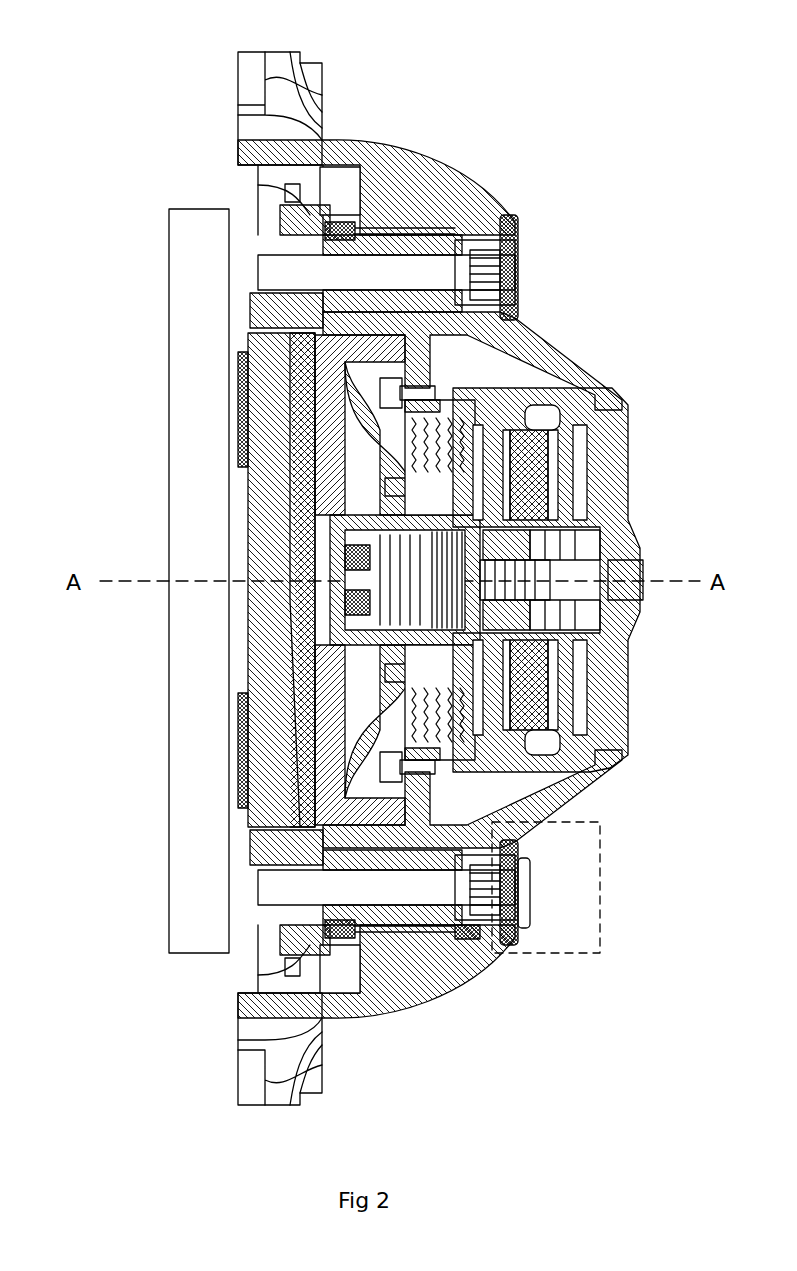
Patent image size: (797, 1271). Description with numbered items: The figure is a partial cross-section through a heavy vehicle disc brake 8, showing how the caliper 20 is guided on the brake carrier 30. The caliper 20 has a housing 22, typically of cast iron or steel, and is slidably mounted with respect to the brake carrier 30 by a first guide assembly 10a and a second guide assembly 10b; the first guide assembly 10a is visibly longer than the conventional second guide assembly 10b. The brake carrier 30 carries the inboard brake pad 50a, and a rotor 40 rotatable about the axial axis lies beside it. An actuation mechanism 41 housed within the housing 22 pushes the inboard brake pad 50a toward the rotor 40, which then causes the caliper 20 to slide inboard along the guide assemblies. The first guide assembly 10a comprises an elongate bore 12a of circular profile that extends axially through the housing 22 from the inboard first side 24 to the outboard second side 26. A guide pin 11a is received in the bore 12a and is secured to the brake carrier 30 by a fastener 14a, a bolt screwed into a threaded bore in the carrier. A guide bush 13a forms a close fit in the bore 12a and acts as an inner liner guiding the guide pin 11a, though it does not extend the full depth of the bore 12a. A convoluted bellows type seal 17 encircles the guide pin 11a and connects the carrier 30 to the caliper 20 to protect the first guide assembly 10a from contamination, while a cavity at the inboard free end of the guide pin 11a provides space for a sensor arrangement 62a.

The disc brake 8 is at (608, 153).
The first guide assembly 10a is at (578, 905).
The second guide assembly 10b is at (520, 262).
The guide pin 11a is at (380, 935).
The bore 12a is at (410, 895).
The guide bush 13a is at (505, 935).
The fastener 14a is at (468, 940).
The convoluted bellows type seal 17 is at (330, 840).
The caliper 20 is at (628, 455).
The housing 22 is at (435, 200).
The first side 24 is at (578, 815).
The second side 26 is at (225, 982).
The brake carrier 30 is at (262, 72).
The rotor 40 is at (190, 370).
The actuation mechanism 41 is at (335, 608).
The inboard brake pad 50a is at (278, 385).
The sensor arrangement 62a is at (520, 890).